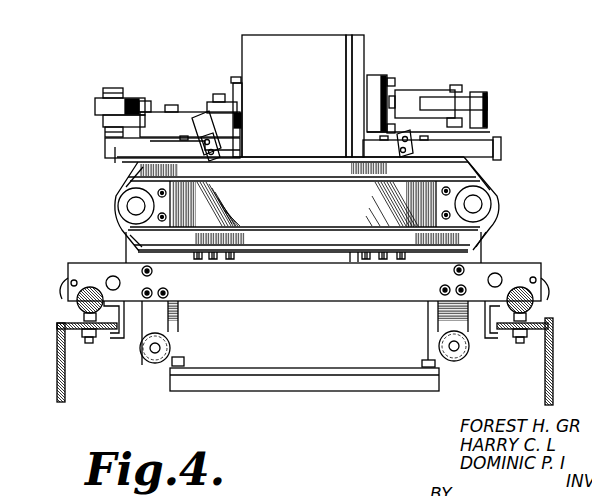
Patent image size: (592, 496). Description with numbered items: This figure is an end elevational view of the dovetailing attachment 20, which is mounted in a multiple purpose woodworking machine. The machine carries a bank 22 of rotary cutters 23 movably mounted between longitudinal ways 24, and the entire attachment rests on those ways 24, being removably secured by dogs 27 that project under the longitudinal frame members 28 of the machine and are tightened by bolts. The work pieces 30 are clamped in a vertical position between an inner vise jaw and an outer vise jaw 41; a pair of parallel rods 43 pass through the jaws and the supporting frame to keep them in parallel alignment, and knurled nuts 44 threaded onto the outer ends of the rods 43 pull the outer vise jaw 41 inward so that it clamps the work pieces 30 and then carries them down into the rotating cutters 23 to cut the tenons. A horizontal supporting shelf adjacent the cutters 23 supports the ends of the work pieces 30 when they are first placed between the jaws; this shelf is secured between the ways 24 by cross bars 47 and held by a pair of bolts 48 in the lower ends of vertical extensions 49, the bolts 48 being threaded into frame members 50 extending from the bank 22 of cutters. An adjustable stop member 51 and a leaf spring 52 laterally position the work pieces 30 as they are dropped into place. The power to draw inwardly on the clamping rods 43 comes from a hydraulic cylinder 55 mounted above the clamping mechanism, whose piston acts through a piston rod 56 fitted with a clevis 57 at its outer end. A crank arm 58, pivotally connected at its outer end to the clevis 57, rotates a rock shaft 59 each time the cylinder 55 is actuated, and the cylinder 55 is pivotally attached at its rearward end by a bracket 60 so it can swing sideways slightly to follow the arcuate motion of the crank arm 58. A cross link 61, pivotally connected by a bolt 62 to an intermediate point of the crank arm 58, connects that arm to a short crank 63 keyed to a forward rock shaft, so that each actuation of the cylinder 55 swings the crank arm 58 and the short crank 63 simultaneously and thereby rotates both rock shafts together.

The dovetailing attachment 20 is at (320, 219).
The bank of rotary cutters 22 is at (304, 359).
The rotary cutters 23 is at (380, 258).
The longitudinal ways 24 is at (76, 302).
The dogs 27 is at (115, 338).
The longitudinal frame members 28 is at (65, 373).
The work pieces 30 is at (294, 46).
The outer vise jaw 41 is at (460, 172).
The parallel rods 43 is at (134, 208).
The knurled nuts 44 is at (119, 205).
The cross bars 47 is at (520, 268).
The bolts 48 is at (172, 346).
The vertical extensions 49 is at (160, 318).
The frame members 50 is at (142, 366).
The adjustable stop member 51 is at (366, 152).
The leaf spring 52 is at (225, 151).
The hydraulic cylinder 55 is at (378, 78).
The piston rod 56 is at (392, 96).
The clevis 57 is at (420, 92).
The crank arm 58 is at (470, 100).
The rock shaft 59 is at (485, 96).
The bracket 60 is at (209, 106).
The cross link 61 is at (470, 119).
The bolt 62 is at (456, 88).
The short crank 63 is at (142, 100).